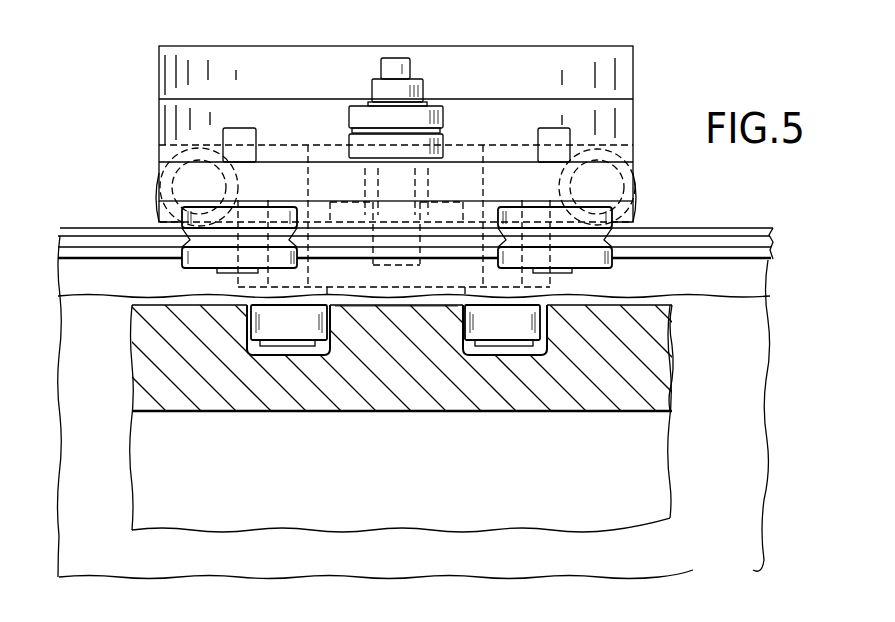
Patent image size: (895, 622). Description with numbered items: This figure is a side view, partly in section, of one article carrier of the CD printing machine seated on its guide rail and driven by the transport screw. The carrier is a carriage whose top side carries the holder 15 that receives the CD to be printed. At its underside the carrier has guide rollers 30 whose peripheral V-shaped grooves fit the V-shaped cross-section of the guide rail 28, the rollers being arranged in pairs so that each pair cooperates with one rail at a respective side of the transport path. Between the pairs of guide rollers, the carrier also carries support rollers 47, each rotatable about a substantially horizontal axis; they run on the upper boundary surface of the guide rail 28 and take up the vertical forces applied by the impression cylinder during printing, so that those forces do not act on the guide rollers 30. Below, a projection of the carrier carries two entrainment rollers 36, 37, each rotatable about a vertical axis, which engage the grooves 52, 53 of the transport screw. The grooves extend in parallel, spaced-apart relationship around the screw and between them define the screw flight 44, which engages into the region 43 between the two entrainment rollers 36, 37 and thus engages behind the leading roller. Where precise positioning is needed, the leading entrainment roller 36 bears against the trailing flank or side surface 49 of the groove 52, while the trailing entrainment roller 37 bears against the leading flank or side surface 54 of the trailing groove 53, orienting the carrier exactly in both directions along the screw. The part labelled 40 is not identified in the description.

The holder 15 is at (635, 67).
The guide rail 28 is at (760, 240).
The guide rollers 30 is at (190, 252).
The entrainment roller 36 is at (283, 328).
The entrainment roller 37 is at (513, 328).
The support block 40 is at (637, 412).
The region between the entrainment rollers 43 is at (420, 302).
The screw flight 44 is at (373, 317).
The support rollers 47 is at (155, 182).
The flank or side surface 49 is at (323, 352).
The groove 52 is at (255, 348).
The groove 53 is at (540, 350).
The flank or side surface 54 is at (477, 348).